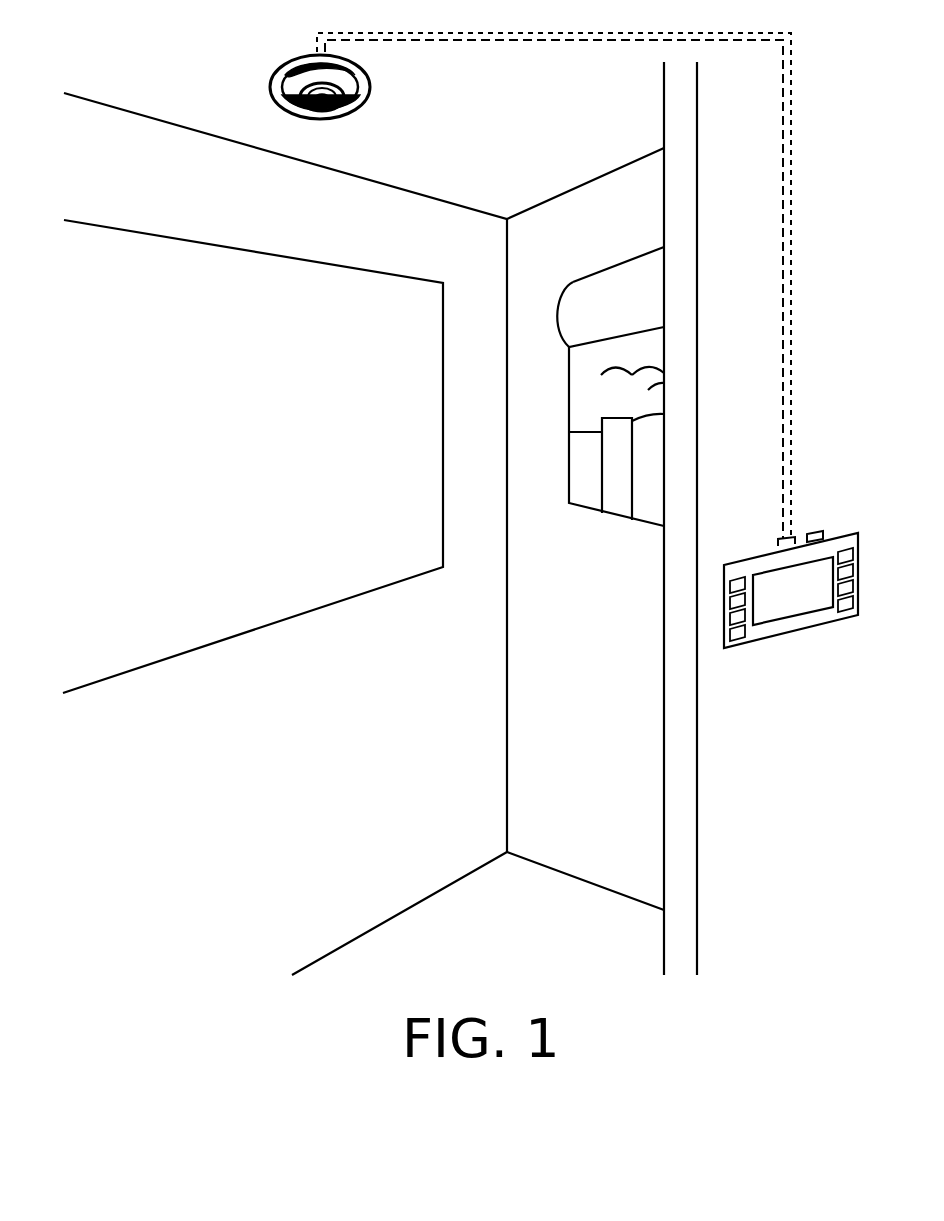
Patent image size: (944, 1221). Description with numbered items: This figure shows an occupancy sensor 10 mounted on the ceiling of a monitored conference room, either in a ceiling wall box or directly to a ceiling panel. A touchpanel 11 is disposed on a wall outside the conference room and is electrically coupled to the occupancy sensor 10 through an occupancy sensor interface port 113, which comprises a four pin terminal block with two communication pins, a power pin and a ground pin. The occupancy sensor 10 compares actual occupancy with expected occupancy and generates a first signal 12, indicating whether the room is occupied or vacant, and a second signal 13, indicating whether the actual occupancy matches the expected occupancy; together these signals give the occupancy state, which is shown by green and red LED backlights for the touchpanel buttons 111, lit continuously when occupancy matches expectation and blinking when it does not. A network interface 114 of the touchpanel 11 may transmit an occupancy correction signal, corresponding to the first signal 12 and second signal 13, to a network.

The occupancy sensor 10 is at (362, 98).
The touchpanel 11 is at (787, 579).
The touchpanel buttons 111 is at (847, 603).
The occupancy sensor interface port 113 is at (778, 545).
The network interface 114 is at (818, 533).
The first signal 12 is at (782, 283).
The second signal 13 is at (796, 258).